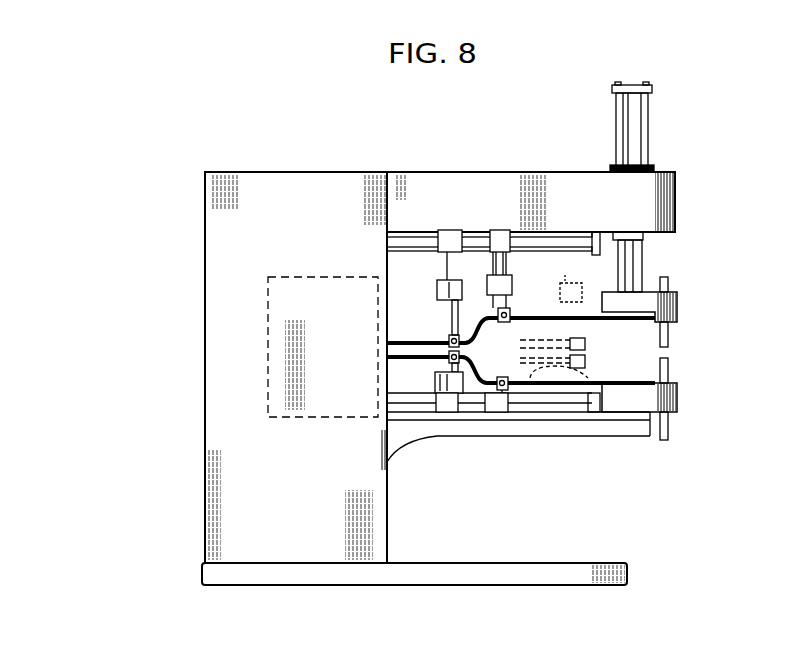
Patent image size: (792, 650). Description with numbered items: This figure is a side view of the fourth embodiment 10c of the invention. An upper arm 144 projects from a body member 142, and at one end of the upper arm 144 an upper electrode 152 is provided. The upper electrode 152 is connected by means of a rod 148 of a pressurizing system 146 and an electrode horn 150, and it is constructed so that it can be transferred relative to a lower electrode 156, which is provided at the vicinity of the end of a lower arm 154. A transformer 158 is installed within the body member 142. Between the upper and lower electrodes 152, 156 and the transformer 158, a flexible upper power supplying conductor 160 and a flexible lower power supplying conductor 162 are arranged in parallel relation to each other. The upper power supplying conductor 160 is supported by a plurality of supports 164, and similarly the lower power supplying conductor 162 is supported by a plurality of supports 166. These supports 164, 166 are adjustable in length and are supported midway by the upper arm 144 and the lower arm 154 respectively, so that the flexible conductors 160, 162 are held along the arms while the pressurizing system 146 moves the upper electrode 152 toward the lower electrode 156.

The fourth embodiment 10c is at (712, 142).
The body member 142 is at (290, 181).
The upper arm 144 is at (676, 197).
The pressurizing system 146 is at (640, 118).
The rod 148 is at (645, 250).
The electrode horn 150 is at (678, 308).
The upper electrode 152 is at (670, 280).
The lower arm 154 is at (592, 428).
The lower electrode 156 is at (670, 367).
The transformer 158 is at (286, 344).
The upper power supplying conductor 160 is at (533, 317).
The lower power supplying conductor 162 is at (582, 370).
The supports 164 is at (438, 286).
The supports 166 is at (447, 400).